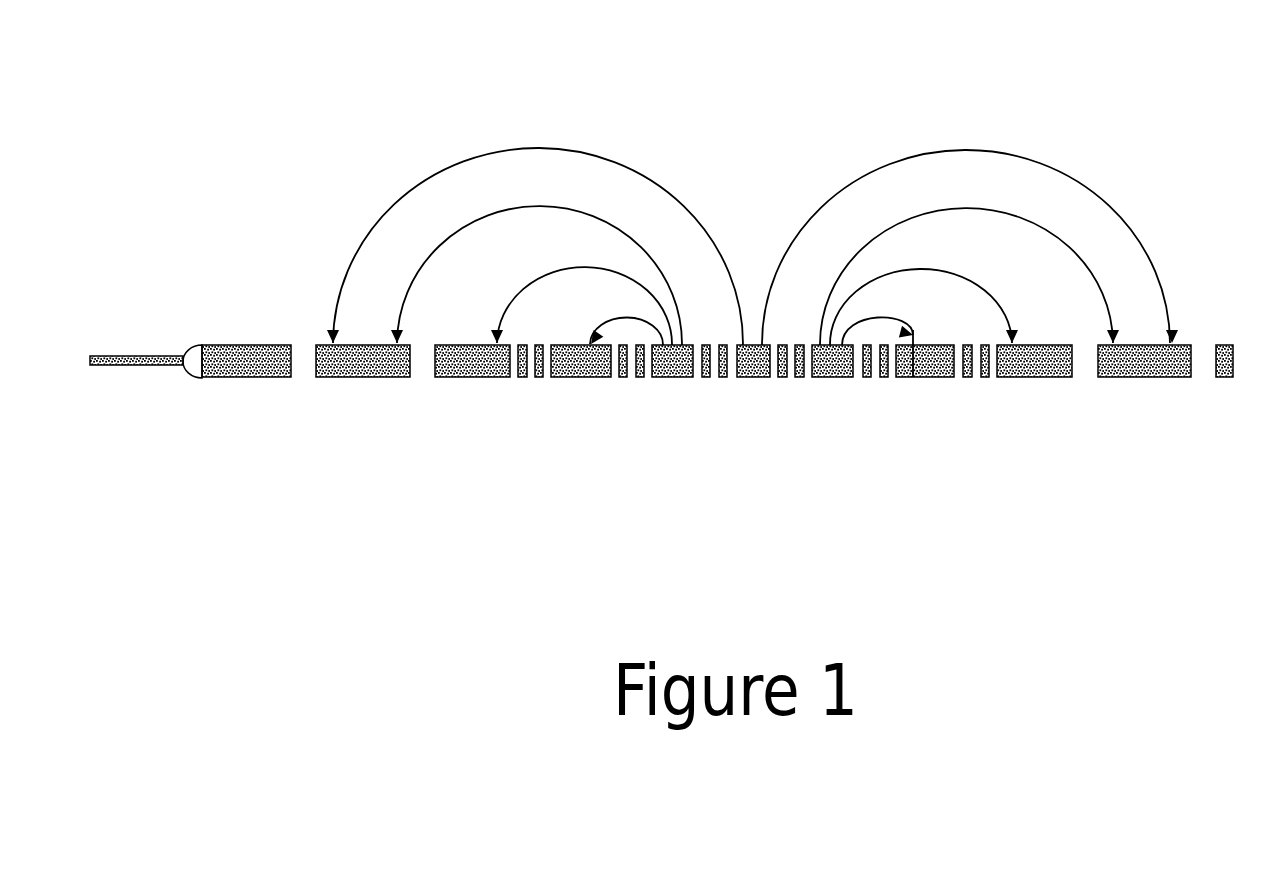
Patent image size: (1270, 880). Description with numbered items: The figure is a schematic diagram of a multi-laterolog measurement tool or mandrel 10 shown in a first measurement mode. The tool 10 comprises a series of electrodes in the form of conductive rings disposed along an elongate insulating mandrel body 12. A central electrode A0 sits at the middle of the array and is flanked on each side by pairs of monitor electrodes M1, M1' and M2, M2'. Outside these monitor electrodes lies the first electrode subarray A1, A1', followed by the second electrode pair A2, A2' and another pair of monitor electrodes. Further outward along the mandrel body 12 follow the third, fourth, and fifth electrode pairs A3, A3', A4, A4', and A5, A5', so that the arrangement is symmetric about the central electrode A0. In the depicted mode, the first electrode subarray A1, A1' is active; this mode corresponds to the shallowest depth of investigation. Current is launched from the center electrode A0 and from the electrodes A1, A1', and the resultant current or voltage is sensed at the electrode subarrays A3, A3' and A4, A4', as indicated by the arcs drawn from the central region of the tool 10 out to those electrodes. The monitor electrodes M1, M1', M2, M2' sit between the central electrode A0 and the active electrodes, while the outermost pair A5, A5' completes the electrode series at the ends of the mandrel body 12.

The multi-laterolog measurement tool 10 is at (766, 49).
The insulating mandrel body 12 is at (223, 350).
The central electrode A0 is at (753, 379).
The first electrode A1 is at (672, 379).
The second electrode A2 is at (581, 379).
The third electrode A3 is at (472, 379).
The fourth electrode A4 is at (363, 379).
The fifth electrode A5 is at (246, 379).
The first electrode (mirror side) A1' is at (834, 379).
The second electrode (mirror side) A2' is at (925, 379).
The third electrode (mirror side) A3' is at (1034, 379).
The fourth electrode (mirror side) A4' is at (1144, 379).
The fifth electrode (mirror side) A5' is at (1226, 379).
The monitor electrode M1 is at (725, 406).
The monitor electrode M2 is at (680, 406).
The monitor electrode (mirror side) M1' is at (787, 406).
The monitor electrode (mirror side) M2' is at (830, 406).